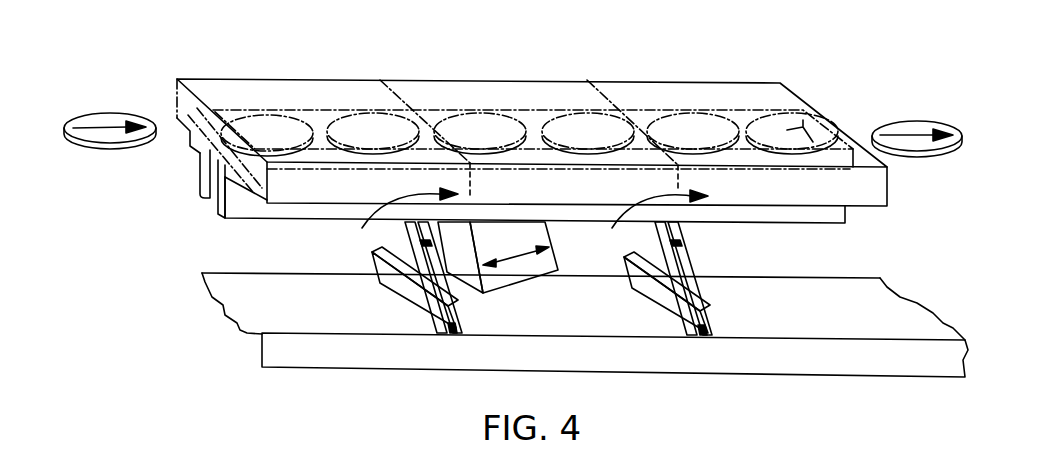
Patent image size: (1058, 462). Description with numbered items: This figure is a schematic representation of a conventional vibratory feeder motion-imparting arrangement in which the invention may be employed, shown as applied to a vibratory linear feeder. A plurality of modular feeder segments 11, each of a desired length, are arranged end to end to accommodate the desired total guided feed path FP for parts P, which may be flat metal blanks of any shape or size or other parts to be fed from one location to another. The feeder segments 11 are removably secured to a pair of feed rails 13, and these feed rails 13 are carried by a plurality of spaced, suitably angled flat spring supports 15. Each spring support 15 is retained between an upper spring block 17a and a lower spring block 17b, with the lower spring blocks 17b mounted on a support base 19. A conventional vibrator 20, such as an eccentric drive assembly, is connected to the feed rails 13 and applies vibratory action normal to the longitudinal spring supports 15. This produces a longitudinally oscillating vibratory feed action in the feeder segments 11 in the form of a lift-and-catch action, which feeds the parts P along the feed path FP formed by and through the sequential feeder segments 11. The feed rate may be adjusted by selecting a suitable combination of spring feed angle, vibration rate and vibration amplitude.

The feeder segment 11 is at (257, 83).
The feed rail 13 is at (200, 190).
The spring support 15 is at (425, 278).
The upper spring block 17a is at (395, 231).
The lower spring block 17b is at (428, 311).
The base plate 19 is at (825, 365).
The vibrator 20 is at (520, 276).
The part P is at (98, 112).
The feed path FP is at (423, 110).